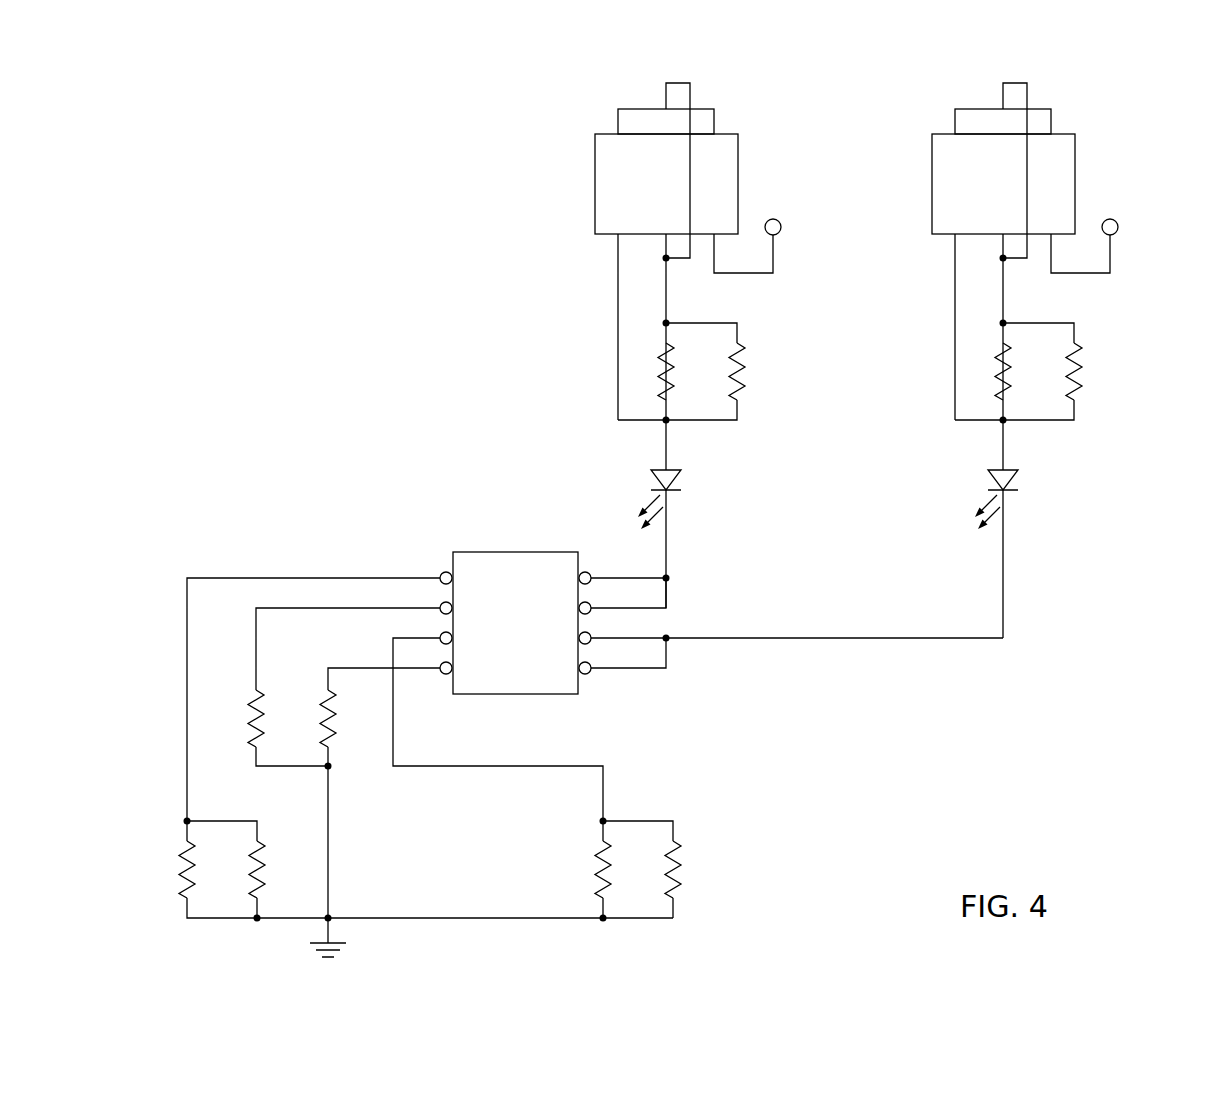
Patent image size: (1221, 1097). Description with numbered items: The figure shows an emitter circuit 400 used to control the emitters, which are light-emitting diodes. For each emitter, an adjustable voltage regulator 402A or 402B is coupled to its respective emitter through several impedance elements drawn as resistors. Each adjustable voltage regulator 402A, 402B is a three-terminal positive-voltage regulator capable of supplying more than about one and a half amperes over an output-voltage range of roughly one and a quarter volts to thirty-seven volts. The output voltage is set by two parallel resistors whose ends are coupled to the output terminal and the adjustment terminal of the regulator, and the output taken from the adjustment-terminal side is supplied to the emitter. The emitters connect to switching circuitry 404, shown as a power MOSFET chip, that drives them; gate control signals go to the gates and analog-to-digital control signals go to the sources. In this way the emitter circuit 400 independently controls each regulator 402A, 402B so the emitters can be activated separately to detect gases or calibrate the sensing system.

The emitter circuit 400 is at (283, 70).
The adjustable voltage regulator 402A is at (595, 184).
The adjustable voltage regulator 402B is at (932, 184).
The switching circuitry 404 is at (515, 694).